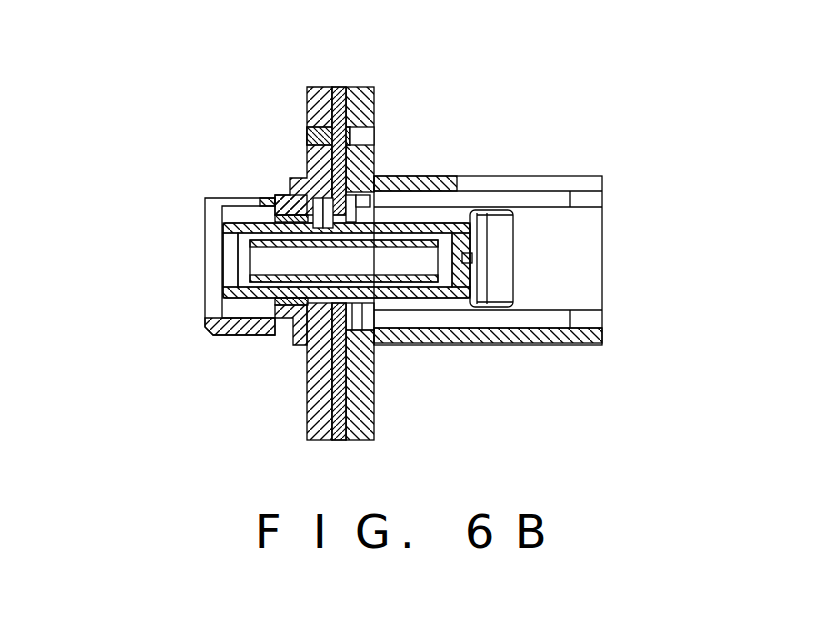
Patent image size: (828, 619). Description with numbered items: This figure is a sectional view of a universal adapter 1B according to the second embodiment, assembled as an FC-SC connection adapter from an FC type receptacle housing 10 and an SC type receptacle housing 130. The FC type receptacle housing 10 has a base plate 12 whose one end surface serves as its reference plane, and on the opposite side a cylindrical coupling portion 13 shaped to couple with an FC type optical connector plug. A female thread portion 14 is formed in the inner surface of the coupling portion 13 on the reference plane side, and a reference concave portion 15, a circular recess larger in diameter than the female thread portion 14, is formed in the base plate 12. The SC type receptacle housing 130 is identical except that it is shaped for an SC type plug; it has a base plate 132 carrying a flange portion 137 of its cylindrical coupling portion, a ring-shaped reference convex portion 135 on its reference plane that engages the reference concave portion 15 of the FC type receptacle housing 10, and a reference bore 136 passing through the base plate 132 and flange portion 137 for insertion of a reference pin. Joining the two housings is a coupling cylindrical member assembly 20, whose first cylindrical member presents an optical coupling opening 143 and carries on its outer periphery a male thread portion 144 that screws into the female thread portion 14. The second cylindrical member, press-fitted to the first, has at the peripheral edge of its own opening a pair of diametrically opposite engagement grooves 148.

The universal adapter 1B is at (185, 130).
The FC type receptacle housing 10 is at (281, 170).
The base plate 12 is at (318, 87).
The coupling portion 13 is at (235, 334).
The female thread portion 14 is at (283, 318).
The reference concave portion 15 is at (297, 198).
The flange 20 is at (393, 166).
The SC type receptacle housing 130 is at (537, 343).
The base plate 132 is at (333, 87).
The reference convex portion 135 is at (307, 350).
The reference bore 136 is at (360, 135).
The flange portion 137 is at (355, 87).
The optical coupling opening 143 is at (225, 275).
The male thread portion 144 is at (285, 328).
The engagement grooves 148 is at (470, 258).